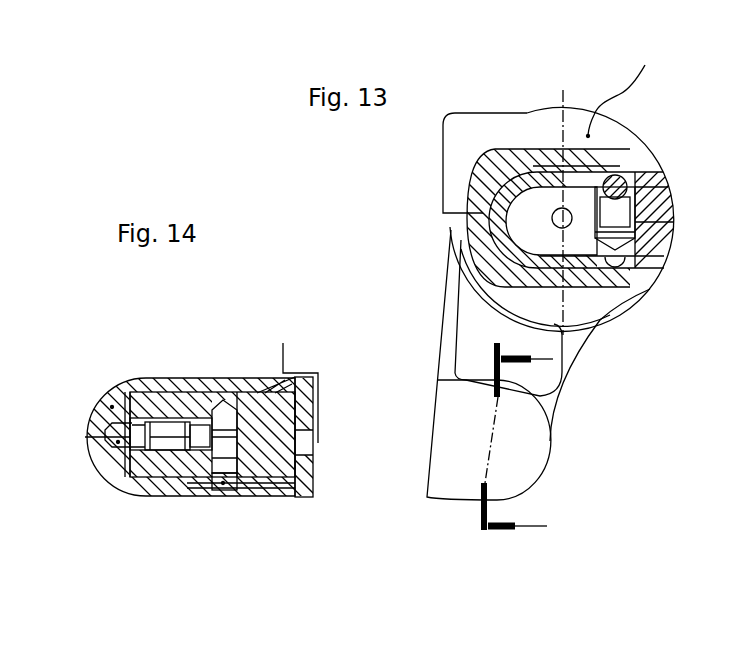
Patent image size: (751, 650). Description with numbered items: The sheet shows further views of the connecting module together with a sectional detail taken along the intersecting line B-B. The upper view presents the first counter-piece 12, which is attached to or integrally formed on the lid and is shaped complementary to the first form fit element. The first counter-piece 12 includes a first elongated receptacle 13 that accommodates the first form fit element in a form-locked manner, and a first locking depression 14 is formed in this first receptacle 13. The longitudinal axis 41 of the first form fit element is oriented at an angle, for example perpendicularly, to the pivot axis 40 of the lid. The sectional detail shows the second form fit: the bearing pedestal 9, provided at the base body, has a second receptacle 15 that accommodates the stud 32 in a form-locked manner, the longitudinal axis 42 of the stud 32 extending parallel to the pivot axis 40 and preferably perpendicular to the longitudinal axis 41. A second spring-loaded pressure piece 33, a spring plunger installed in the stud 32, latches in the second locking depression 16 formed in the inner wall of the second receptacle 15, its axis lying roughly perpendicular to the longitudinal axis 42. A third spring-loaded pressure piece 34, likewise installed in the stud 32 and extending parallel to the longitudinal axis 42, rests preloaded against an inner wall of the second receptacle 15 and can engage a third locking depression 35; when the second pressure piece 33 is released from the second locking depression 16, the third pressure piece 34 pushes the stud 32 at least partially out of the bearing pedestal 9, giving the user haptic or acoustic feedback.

In FIG. 14, the bearing pedestal 9 is at (112, 407).
In FIG. 13, the first counter-piece 12 is at (588, 266).
In FIG. 13, the first elongated receptacle 13 is at (527, 181).
In FIG. 13, the first locking depression 14 is at (623, 183).
In FIG. 14, the second receptacle 15 is at (182, 377).
In FIG. 14, the second locking depression 16 is at (241, 498).
In FIG. 14, the stud 32 is at (248, 393).
In FIG. 14, the second spring-loaded pressure piece 33 is at (223, 488).
In FIG. 14, the third spring-loaded pressure piece 34 is at (118, 442).
In FIG. 14, the third locking depression 35 is at (127, 397).
In FIG. 13, the pivot axis 40 is at (488, 222).
In FIG. 13, the longitudinal axis 41 is at (674, 222).
In FIG. 14, the longitudinal axis 42 is at (318, 443).